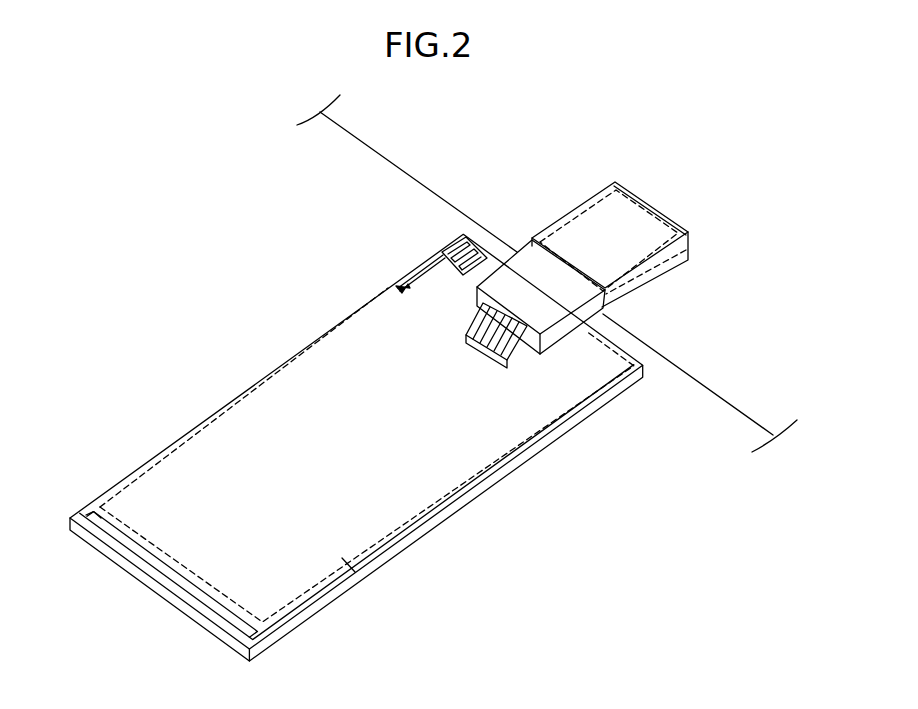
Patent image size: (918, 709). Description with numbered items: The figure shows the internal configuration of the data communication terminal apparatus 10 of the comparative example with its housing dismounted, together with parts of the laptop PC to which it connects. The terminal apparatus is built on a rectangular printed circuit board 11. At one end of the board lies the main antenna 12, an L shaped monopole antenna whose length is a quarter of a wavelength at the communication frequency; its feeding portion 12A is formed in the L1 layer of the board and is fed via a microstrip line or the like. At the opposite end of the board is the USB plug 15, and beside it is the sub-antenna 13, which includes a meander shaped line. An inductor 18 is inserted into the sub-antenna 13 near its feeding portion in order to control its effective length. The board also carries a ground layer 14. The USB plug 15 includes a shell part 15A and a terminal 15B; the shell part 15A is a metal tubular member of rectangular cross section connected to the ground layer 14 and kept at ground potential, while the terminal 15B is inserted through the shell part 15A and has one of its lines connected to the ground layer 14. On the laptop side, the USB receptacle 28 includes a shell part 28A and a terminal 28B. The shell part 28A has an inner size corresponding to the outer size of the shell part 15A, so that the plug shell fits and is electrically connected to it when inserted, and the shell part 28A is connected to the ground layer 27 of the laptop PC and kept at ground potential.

The data communication terminal apparatus 10 is at (250, 360).
The printed circuit board 11 is at (457, 508).
The main antenna 12 is at (173, 580).
The feeding portion 12A is at (92, 511).
The sub-antenna 13 is at (442, 252).
The ground layer 14 is at (362, 578).
The USB plug 15 is at (558, 389).
The shell part 15A is at (548, 308).
The terminal 15B is at (520, 352).
The inductor 18 is at (400, 283).
The ground layer 27 is at (749, 397).
The USB receptacle 28 is at (672, 244).
The shell part 28A is at (686, 237).
The terminal 28B is at (672, 205).